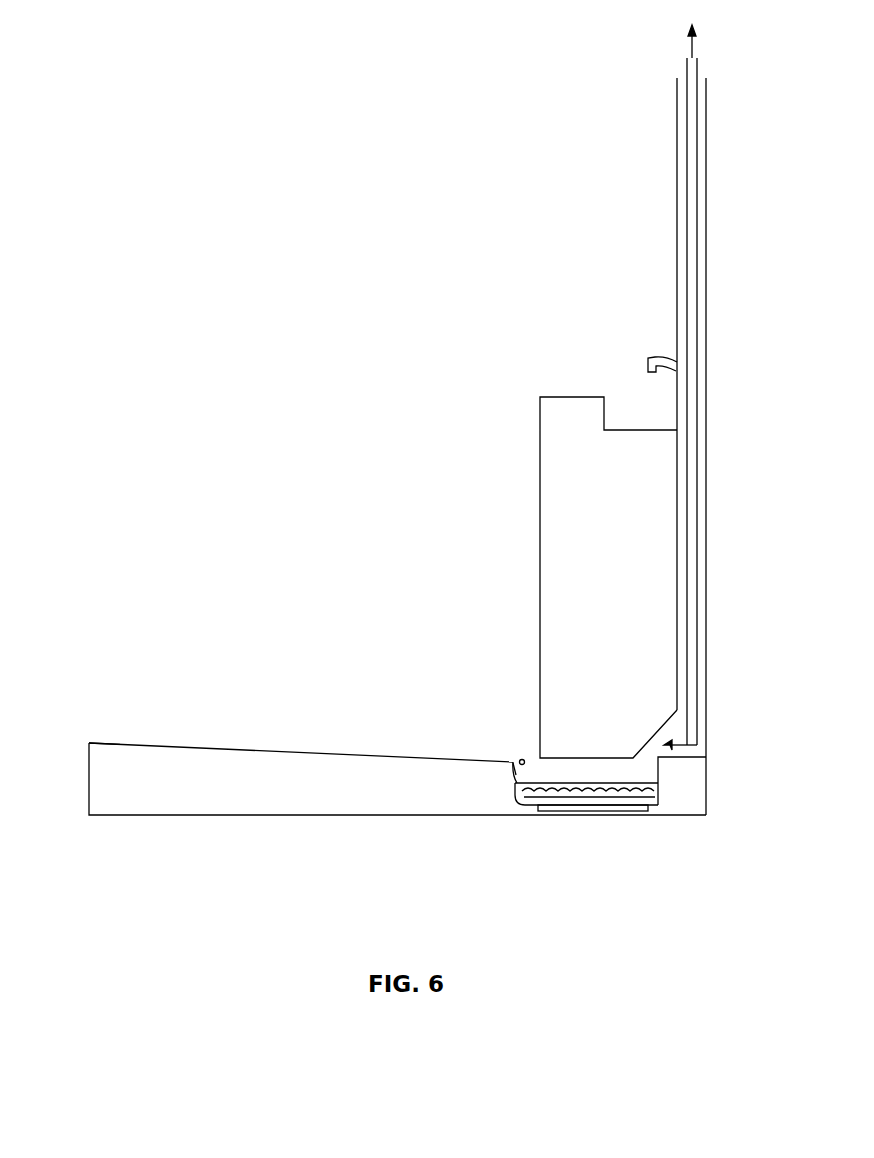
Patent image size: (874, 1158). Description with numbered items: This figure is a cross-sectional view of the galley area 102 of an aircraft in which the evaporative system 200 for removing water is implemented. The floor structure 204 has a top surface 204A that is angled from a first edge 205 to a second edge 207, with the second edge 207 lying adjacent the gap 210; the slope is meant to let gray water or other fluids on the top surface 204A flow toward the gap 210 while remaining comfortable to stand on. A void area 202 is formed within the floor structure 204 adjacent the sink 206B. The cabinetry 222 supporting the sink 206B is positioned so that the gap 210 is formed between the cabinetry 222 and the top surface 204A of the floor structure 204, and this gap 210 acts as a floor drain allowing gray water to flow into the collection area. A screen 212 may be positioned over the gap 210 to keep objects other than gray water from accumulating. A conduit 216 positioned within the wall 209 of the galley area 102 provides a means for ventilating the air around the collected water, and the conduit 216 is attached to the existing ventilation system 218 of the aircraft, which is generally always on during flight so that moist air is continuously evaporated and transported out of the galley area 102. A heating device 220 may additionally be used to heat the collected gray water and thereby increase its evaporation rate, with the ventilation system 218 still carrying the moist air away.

The galley area 102 is at (513, 466).
The system 200 is at (564, 815).
The void area 202 is at (645, 772).
The floor structure 204 is at (88, 777).
The top surface 204A is at (181, 748).
The first edge 205 is at (115, 743).
The sink 206B is at (623, 405).
The second edge 207 is at (517, 767).
The wall 209 is at (722, 368).
The gap 210 is at (518, 762).
The screen 212 is at (524, 760).
The conduit 216 is at (690, 262).
The ventilation system 218 is at (691, 44).
The heating device 220 is at (645, 812).
The cabinetry 222 is at (540, 515).